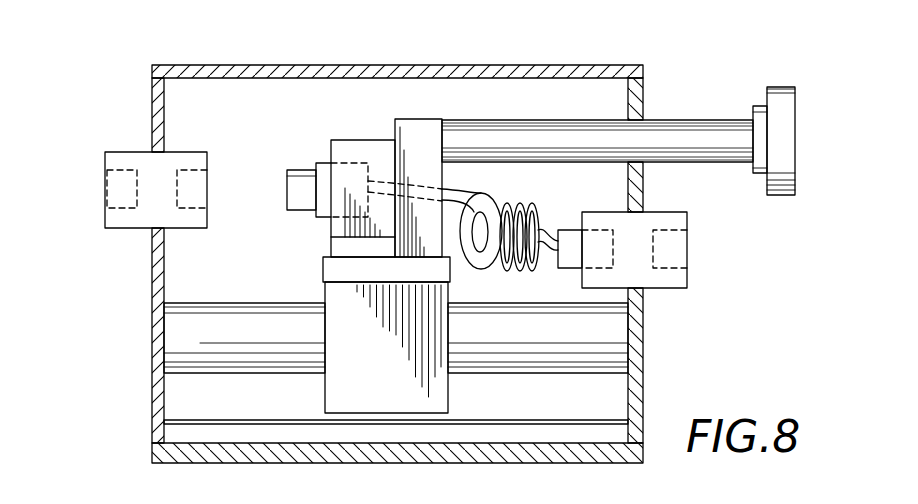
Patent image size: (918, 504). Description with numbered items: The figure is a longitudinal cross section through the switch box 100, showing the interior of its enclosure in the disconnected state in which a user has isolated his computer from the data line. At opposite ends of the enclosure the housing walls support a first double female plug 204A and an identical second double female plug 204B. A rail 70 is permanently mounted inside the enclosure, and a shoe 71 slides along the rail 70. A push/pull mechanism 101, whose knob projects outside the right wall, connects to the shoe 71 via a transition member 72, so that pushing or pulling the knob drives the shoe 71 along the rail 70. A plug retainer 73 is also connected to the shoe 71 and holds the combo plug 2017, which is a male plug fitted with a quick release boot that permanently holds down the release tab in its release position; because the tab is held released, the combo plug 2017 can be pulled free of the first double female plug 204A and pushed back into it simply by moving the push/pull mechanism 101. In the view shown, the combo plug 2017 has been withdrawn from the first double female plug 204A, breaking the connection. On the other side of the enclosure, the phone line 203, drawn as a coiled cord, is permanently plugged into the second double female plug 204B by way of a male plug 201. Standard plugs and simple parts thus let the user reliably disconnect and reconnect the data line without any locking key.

The switch box 100 is at (667, 53).
The push/pull mechanism 101 is at (782, 87).
The rail 70 is at (196, 340).
The shoe 71 is at (405, 378).
The transition member 72 is at (418, 142).
The plug retainer 73 is at (365, 140).
The combo plug 2017 is at (320, 162).
The male plug 201 is at (562, 268).
The phone line 203 is at (530, 203).
The first double female plug 204A is at (127, 152).
The second double female plug 204B is at (688, 277).